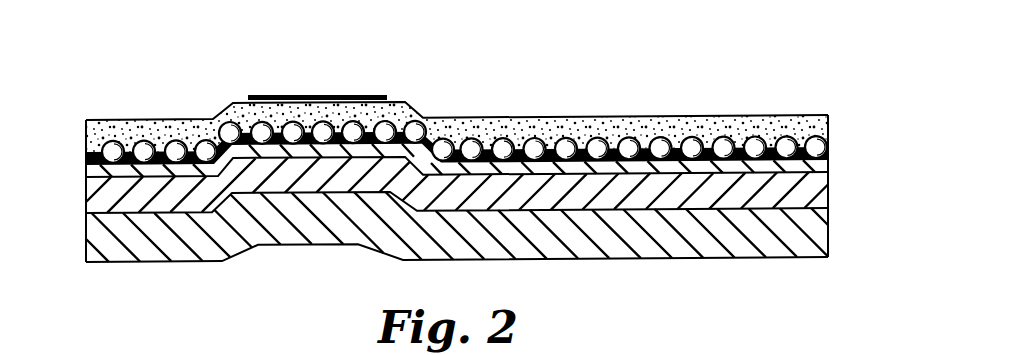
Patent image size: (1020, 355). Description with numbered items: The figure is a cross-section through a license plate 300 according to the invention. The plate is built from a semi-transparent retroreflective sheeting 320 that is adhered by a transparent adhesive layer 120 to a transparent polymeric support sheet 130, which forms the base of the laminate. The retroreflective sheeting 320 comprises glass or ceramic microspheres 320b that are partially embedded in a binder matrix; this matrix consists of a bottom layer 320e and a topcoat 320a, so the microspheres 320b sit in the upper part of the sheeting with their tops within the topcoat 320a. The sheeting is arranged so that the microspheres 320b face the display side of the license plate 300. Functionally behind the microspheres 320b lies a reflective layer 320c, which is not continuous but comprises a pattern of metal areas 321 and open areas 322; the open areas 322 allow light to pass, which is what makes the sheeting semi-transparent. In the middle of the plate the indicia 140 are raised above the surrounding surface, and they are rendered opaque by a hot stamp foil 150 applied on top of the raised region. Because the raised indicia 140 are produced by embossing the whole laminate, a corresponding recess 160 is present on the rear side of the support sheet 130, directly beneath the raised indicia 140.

The license plate 300 is at (126, 80).
The semi-transparent retroreflective sheeting 320 is at (82, 110).
The topcoat 320a is at (762, 127).
The microspheres 320b is at (782, 143).
The reflective layer 320c is at (820, 146).
The bottom layer 320e is at (813, 165).
The metal areas 321 is at (625, 162).
The open areas 322 is at (675, 160).
The transparent adhesive layer 120 is at (813, 197).
The transparent polymeric support sheet 130 is at (818, 240).
The indicia 140 is at (415, 117).
The hot stamp foil 150 is at (298, 95).
The recess 160 is at (287, 253).